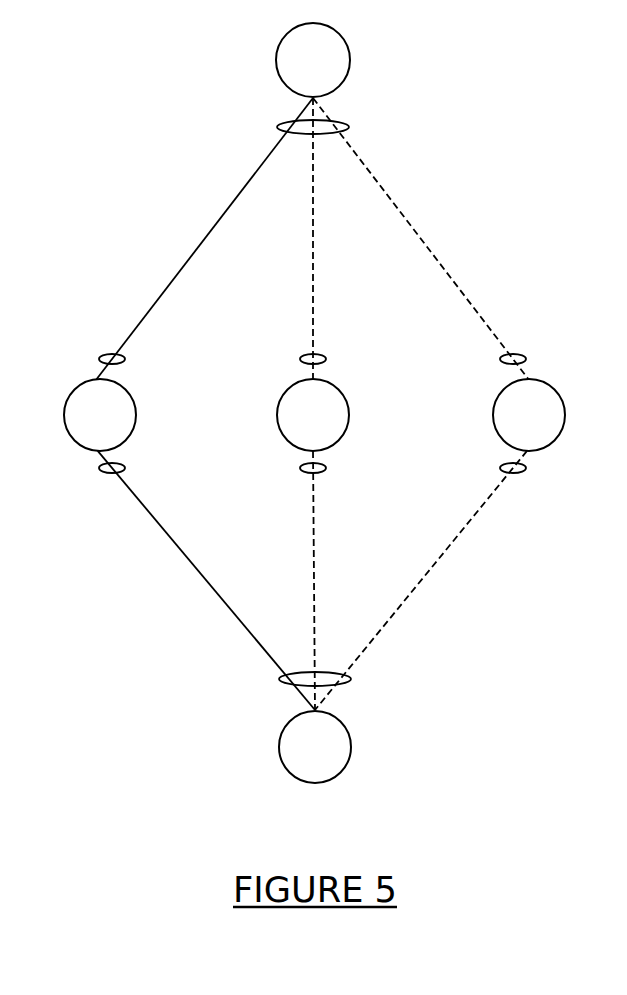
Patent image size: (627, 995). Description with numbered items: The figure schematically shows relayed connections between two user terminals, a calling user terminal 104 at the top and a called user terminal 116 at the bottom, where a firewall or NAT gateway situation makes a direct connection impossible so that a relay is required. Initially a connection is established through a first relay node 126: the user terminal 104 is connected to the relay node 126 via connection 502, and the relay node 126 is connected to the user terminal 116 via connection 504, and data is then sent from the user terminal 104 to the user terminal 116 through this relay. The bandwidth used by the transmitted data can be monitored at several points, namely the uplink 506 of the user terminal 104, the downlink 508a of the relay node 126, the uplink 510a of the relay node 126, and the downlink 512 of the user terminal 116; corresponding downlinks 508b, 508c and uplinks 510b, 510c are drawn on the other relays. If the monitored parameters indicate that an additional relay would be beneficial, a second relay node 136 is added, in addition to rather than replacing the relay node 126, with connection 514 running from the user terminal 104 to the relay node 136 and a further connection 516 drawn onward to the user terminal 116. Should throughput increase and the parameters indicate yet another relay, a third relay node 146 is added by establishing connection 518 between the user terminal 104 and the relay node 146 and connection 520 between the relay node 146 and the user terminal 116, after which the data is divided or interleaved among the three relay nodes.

The user terminal 104 is at (296, 71).
The user terminal 116 is at (298, 758).
The relay node 126 is at (83, 426).
The relay node 136 is at (296, 426).
The relay node 146 is at (512, 426).
The connection 502 is at (198, 243).
The connection 504 is at (197, 570).
The uplink 506 is at (349, 124).
The downlink 508a is at (125, 359).
The input interface of node 136 508b is at (326, 359).
The input interface of node 146 508c is at (526, 359).
The uplink 510a is at (125, 468).
The output interface of node 136 510b is at (326, 468).
The output interface of node 146 510c is at (526, 468).
The downlink 512 is at (351, 678).
The connection 514 is at (313, 272).
The alternate path segment 516 is at (313, 540).
The connection 518 is at (428, 248).
The connection 520 is at (430, 568).